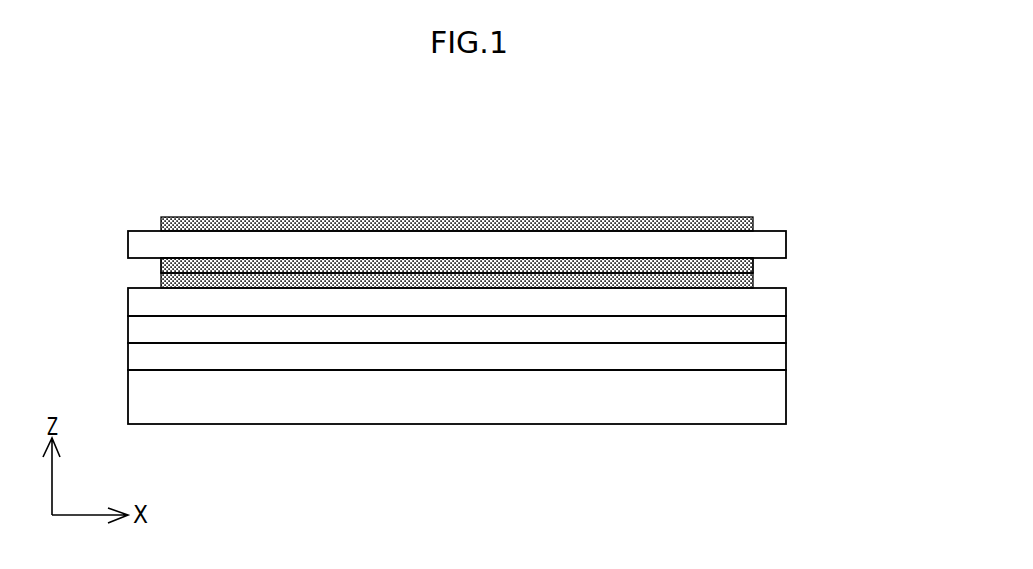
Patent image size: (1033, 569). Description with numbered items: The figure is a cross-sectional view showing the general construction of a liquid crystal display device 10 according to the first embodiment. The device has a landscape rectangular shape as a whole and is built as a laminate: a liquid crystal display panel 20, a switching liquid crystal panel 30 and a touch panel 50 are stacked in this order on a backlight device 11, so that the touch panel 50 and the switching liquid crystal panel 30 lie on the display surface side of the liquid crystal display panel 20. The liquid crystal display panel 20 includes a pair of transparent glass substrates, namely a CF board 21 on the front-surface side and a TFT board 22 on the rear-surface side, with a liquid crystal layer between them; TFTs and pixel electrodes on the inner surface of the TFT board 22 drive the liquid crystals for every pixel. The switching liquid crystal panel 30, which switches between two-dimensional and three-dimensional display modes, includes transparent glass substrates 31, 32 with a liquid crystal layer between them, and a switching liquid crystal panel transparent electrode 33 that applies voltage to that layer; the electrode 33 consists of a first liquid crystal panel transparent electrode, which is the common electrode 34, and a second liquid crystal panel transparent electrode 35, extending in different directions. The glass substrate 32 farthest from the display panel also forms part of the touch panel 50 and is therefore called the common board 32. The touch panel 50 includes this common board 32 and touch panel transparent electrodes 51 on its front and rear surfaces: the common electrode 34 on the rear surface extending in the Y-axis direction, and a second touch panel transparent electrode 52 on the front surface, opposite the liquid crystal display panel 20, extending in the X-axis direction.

The liquid crystal display device 10 is at (477, 314).
The backlight device 11 is at (487, 397).
The liquid crystal display panel 20 is at (510, 342).
The CF board 21 is at (775, 329).
The TFT board 22 is at (487, 358).
The switching liquid crystal panel 30 is at (474, 250).
The glass substrate 31 is at (138, 303).
The common board 32 is at (147, 245).
The switching liquid crystal panel transparent electrode 33 is at (524, 278).
The common electrode 34 is at (592, 267).
The second liquid crystal panel transparent electrode 35 is at (755, 277).
The touch panel 50 is at (485, 191).
The touch panel transparent electrodes 51 is at (457, 191).
The second touch panel transparent electrode 52 is at (488, 223).